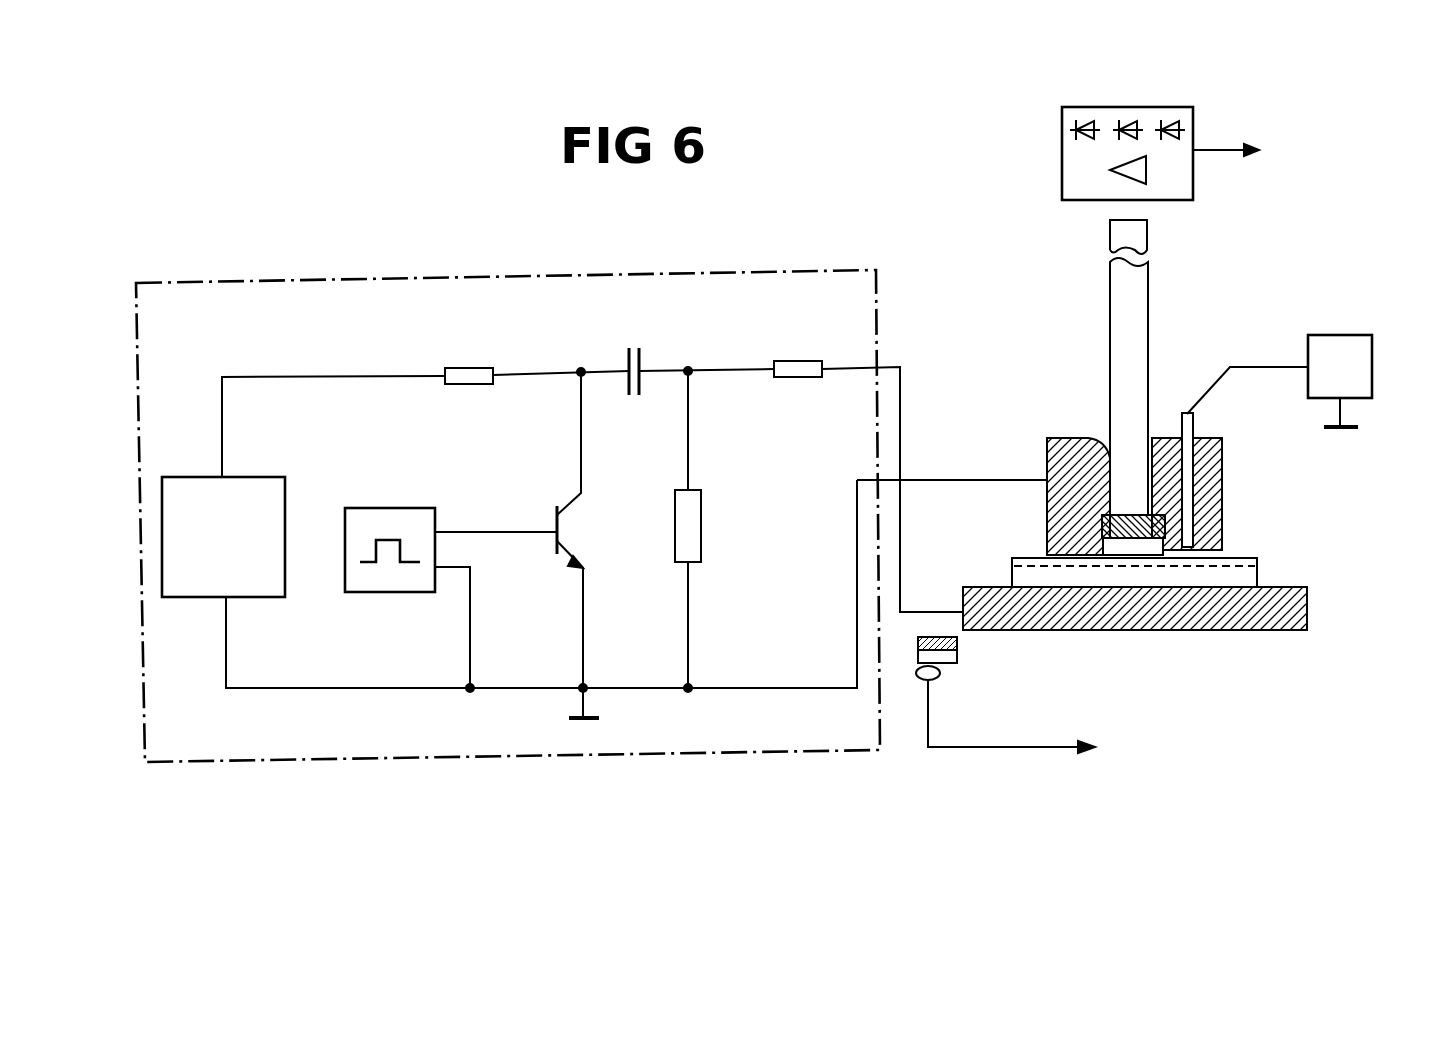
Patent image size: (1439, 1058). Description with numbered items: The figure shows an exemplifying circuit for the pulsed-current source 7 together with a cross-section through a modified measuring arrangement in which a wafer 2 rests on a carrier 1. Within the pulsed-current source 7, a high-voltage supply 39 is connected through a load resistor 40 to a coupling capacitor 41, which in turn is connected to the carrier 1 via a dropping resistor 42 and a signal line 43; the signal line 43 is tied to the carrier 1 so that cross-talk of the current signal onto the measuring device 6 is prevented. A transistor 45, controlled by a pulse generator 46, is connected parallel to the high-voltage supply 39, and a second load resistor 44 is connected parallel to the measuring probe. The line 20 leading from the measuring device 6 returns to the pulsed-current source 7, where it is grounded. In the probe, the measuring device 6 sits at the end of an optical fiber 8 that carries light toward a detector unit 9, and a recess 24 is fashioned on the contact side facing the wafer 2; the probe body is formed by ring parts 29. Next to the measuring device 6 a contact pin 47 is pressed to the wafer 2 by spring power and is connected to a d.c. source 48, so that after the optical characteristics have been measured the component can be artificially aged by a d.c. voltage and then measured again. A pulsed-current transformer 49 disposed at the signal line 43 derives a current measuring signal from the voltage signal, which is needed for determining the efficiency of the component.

The carrier 1 is at (1300, 610).
The wafer 2 is at (1257, 572).
The measuring device 6 is at (1130, 515).
The pulsed-current source 7 is at (202, 283).
The optical fiber 8 is at (1120, 300).
The photodetector unit 9 is at (1062, 150).
The line 20 is at (965, 480).
The recess 24 is at (1164, 545).
The ring electrode 29 is at (1062, 438).
The high-voltage supply 39 is at (192, 477).
The load resistor 40 is at (468, 385).
The coupling capacitor 41 is at (627, 393).
The dropping resistor 42 is at (798, 380).
The signal line 43 is at (903, 388).
The second load resistor 44 is at (675, 528).
The transistor 45 is at (556, 515).
The pulse generator 46 is at (352, 508).
The contact pin 47 is at (1195, 420).
The DC voltage source 48 is at (1374, 350).
The pulsed-current transformer 49 is at (950, 668).